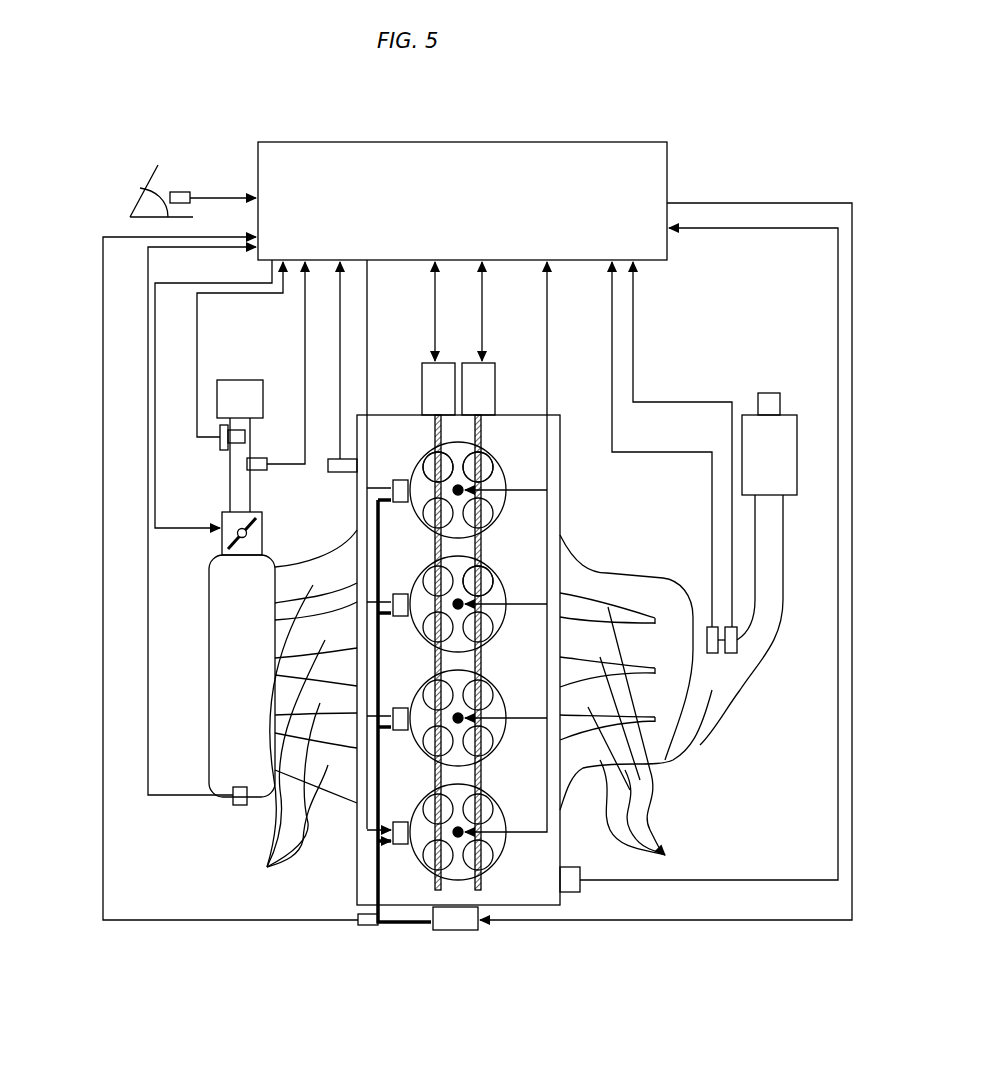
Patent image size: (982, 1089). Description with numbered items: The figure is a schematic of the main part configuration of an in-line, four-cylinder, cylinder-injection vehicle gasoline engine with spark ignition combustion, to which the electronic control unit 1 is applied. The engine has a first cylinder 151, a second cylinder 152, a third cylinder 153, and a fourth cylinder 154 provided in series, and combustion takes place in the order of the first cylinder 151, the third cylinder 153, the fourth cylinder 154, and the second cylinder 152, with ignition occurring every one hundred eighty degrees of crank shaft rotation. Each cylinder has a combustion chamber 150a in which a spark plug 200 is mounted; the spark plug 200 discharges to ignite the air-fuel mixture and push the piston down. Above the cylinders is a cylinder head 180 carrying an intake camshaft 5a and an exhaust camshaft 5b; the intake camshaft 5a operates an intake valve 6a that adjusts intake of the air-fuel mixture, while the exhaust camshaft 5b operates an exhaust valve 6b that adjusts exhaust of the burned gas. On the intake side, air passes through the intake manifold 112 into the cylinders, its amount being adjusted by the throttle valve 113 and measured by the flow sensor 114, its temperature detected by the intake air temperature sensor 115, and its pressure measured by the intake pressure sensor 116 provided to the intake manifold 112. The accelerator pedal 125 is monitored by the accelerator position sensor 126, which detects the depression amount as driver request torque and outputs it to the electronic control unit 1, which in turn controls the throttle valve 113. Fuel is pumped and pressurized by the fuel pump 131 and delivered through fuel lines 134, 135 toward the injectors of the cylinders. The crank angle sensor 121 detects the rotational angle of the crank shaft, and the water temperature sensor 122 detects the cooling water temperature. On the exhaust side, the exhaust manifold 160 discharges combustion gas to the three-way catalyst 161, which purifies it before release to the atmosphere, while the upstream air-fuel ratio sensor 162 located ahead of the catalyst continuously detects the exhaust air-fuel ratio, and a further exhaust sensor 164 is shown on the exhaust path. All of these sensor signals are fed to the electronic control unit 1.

The electronic control unit 1 is at (462, 201).
The intake camshaft 5a is at (432, 392).
The exhaust camshaft 5b is at (485, 393).
The intake valve 6a is at (430, 463).
The exhaust valve 6b is at (490, 466).
The intake manifold 112 is at (283, 711).
The throttle valve 113 is at (220, 548).
The flow sensor 114 is at (220, 443).
The intake air temperature sensor 115 is at (262, 471).
The intake pressure sensor 116 is at (232, 806).
The crank angle sensor 121 is at (585, 893).
The water temperature sensor 122 is at (348, 474).
The accelerator pedal 125 is at (140, 190).
The accelerator position sensor 126 is at (182, 192).
The fuel pump 131 is at (458, 932).
The high pressure fuel line 134 is at (365, 888).
The fuel line 135 is at (367, 848).
The combustion chamber 150a is at (490, 930).
The first cylinder 151 is at (497, 850).
The second cylinder 152 is at (497, 736).
The third cylinder 153 is at (497, 622).
The fourth cylinder 154 is at (497, 508).
The exhaust manifold 160 is at (636, 707).
The three-way catalyst 161 is at (745, 425).
The upstream air-fuel ratio sensor 162 is at (737, 655).
The oxygen sensor 164 is at (713, 655).
The cylinder head 180 is at (345, 895).
The spark plug 200 is at (490, 469).